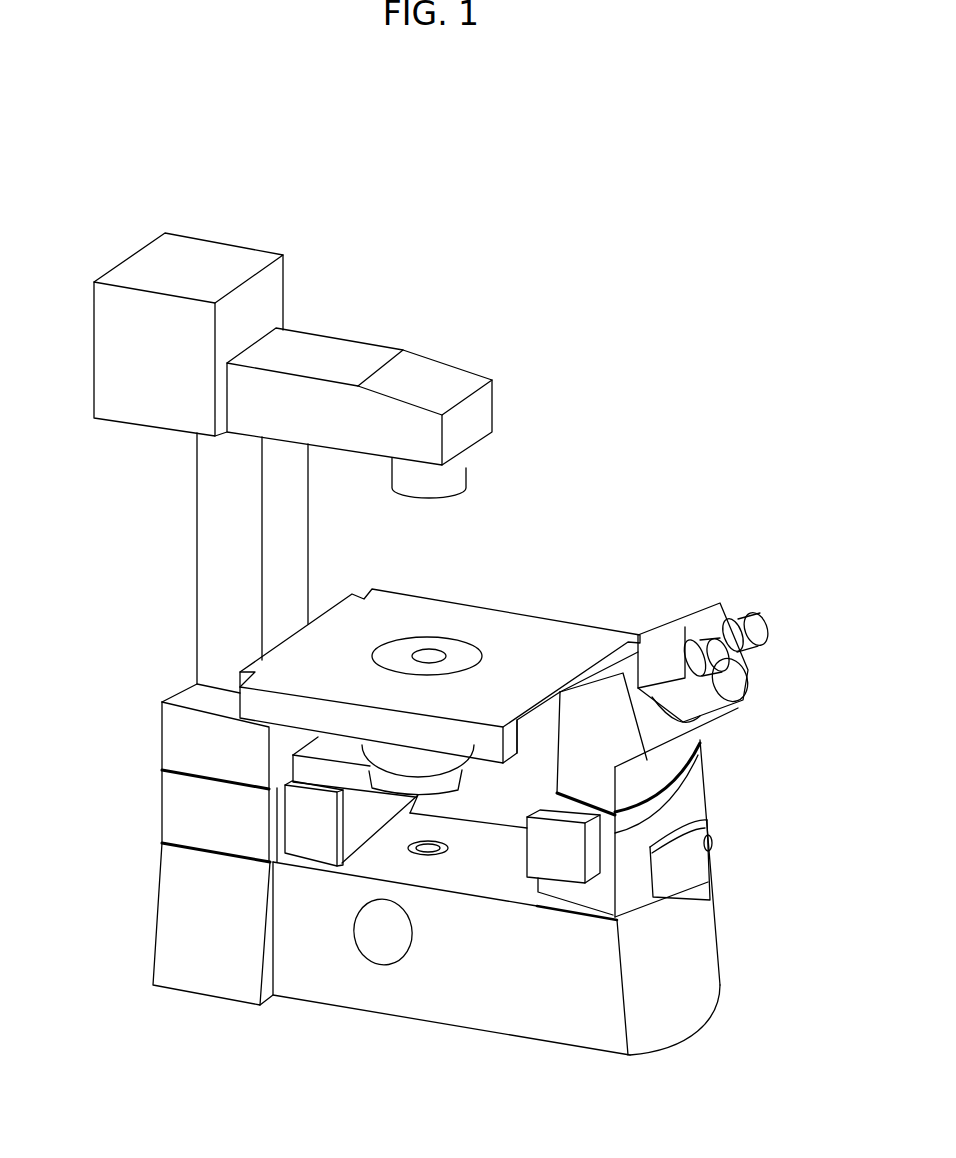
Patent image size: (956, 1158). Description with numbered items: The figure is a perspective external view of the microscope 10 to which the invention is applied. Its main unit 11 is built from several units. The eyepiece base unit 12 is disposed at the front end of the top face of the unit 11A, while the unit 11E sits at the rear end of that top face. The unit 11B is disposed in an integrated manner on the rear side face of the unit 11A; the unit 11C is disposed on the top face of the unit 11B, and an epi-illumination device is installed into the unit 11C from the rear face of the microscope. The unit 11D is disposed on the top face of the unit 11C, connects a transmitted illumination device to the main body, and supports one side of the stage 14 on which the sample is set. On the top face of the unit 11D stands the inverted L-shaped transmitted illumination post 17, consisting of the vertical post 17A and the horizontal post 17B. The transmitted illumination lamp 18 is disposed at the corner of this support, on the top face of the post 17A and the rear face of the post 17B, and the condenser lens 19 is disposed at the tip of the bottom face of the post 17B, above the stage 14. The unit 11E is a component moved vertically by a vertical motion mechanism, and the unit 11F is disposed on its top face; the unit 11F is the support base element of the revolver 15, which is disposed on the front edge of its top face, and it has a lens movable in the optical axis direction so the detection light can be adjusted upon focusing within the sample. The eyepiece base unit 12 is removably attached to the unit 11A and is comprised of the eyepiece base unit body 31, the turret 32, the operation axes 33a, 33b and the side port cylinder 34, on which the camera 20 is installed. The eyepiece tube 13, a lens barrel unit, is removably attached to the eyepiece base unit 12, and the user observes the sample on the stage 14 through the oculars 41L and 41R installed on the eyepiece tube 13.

The microscope 10 is at (630, 208).
The main unit 11 is at (688, 960).
The unit 11A is at (523, 1003).
The unit 11B is at (208, 958).
The unit 11C is at (185, 810).
The unit 11D is at (185, 742).
The unit 11E is at (312, 835).
The unit 11F is at (317, 770).
The eyepiece base unit 12 is at (680, 808).
The eyepiece tube 13 is at (612, 660).
The stage 14 is at (473, 625).
The revolver 15 is at (403, 760).
The transmitted illumination post 17 is at (318, 358).
The vertical post 17A is at (215, 515).
The horizontal post 17B is at (370, 362).
The transmitted illumination lamp 18 is at (205, 262).
The condenser lens 19 is at (440, 482).
The camera 20 is at (557, 850).
The eyepiece base unit body 31 is at (547, 778).
The turret 32 is at (697, 870).
The operation axis 33a is at (667, 863).
The operation axis 33b is at (712, 840).
The side port cylinder 34 is at (668, 778).
The ocular 41L is at (702, 652).
The ocular 41R is at (740, 627).